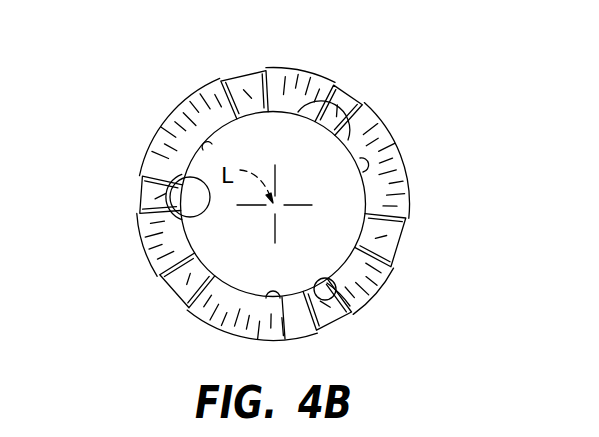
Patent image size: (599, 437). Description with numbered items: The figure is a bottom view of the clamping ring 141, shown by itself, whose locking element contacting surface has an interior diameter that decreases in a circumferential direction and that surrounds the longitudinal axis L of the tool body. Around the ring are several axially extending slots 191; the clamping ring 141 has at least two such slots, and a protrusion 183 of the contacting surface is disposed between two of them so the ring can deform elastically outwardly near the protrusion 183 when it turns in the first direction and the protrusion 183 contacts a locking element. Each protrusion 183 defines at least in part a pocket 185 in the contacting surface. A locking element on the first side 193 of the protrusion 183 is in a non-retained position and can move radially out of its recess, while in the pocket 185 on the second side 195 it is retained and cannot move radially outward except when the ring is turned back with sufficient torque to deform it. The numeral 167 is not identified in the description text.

The clamping ring 141 is at (200, 88).
The ring body 167 is at (178, 135).
The protrusion 183 is at (342, 150).
The pocket 185 is at (208, 148).
The axially extending slot 191 is at (347, 102).
The first side 193 is at (350, 306).
The second side 195 is at (281, 340).